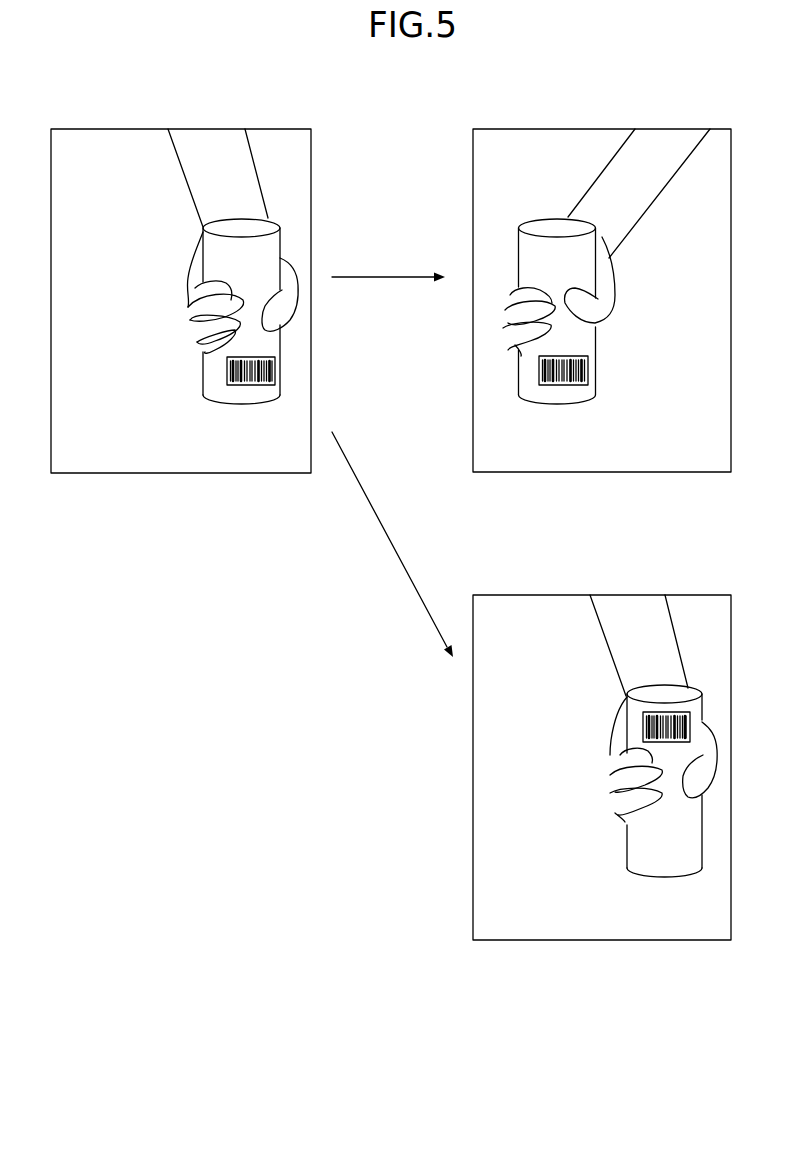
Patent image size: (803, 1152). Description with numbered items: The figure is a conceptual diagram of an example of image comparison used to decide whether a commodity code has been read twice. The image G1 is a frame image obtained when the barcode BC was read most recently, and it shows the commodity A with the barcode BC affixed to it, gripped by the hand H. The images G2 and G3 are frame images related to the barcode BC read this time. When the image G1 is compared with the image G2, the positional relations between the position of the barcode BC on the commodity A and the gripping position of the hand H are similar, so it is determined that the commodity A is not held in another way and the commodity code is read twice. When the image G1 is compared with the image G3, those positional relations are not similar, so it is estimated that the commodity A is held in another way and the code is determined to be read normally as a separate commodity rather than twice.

The image G1 is at (90, 127).
The image G2 is at (512, 127).
The image G3 is at (511, 593).
The hand H is at (225, 138).
The commodity A is at (268, 248).
The barcode BC is at (275, 370).